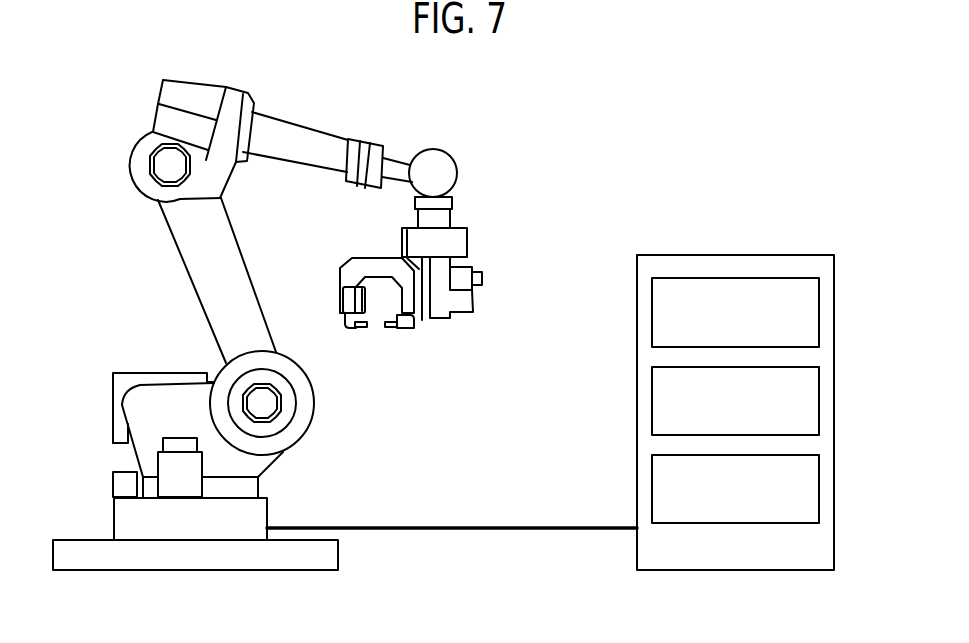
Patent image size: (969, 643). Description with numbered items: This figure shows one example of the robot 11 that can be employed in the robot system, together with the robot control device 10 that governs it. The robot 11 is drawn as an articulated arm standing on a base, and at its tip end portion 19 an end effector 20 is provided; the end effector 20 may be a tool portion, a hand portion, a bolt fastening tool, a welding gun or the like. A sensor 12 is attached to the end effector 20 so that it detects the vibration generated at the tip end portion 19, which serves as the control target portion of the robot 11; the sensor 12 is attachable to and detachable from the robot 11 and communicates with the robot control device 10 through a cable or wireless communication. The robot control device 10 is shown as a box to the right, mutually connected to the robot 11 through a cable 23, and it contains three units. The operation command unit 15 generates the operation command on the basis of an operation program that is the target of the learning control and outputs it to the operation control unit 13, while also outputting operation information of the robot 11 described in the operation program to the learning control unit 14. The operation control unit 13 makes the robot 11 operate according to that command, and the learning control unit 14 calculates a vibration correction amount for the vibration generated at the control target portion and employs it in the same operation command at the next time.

The robot control device 10 is at (764, 376).
The robot 11 is at (158, 272).
The sensor 12 is at (347, 300).
The operation control unit 13 is at (820, 487).
The learning control unit 14 is at (820, 400).
The operation command unit 15 is at (820, 310).
The tip end portion 19 is at (445, 242).
The end effector 20 is at (353, 268).
The cable 23 is at (450, 527).